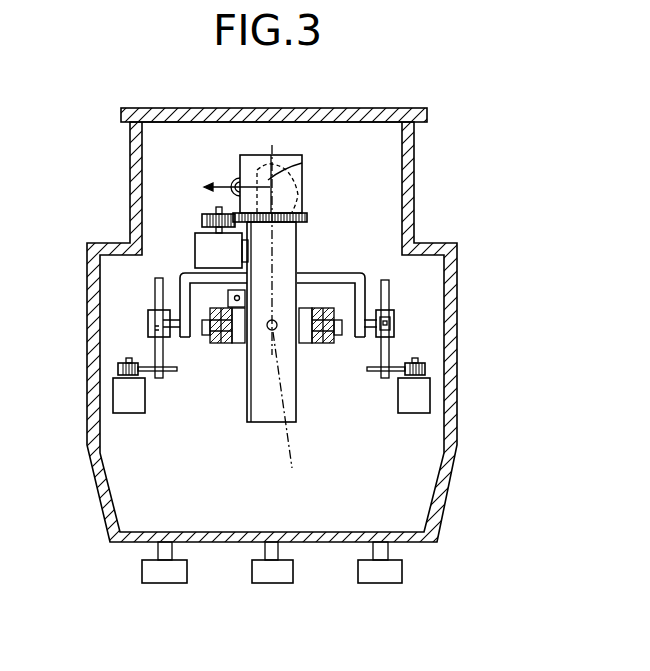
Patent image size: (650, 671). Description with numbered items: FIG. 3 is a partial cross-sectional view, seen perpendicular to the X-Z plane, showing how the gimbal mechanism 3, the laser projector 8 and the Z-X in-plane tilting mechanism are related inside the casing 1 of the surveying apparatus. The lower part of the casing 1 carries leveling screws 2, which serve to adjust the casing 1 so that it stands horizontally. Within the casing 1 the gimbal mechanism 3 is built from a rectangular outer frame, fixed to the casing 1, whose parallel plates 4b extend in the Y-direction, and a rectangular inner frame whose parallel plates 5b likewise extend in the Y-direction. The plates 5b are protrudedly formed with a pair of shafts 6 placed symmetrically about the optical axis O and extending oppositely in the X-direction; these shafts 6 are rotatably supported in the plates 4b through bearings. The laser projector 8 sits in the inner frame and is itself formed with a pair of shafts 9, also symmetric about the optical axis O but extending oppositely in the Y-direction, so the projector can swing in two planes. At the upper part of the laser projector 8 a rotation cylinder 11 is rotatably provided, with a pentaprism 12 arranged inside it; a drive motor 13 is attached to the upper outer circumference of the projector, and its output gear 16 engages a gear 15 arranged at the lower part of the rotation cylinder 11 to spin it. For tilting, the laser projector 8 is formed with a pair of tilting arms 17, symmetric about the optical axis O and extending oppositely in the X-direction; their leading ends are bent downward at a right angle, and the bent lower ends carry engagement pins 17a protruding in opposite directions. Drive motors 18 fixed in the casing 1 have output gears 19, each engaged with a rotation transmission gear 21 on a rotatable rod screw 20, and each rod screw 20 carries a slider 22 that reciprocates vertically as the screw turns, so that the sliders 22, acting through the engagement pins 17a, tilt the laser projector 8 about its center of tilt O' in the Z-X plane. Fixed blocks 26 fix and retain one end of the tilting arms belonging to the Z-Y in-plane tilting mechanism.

The casing 1 is at (458, 417).
The leveling screws 2 is at (163, 585).
The gimbal mechanism 3 is at (333, 302).
The parallel plates 4b is at (213, 343).
The parallel plates 5b is at (233, 343).
The shafts 6 is at (204, 327).
The laser projector 8 is at (275, 332).
The shafts 9 is at (257, 335).
The rotation cylinder 11 is at (280, 153).
The pentaprism 12 is at (303, 187).
The drive motor 13 is at (205, 250).
The gear 15 is at (310, 217).
The output gear 16 is at (204, 213).
The tilting arms 17 is at (180, 274).
The engagement pins 17a is at (392, 321).
The drive motors 18 is at (125, 402).
The output gears 19 is at (118, 368).
The rod screws 20 is at (155, 350).
The rotation transmission gear 21 is at (160, 379).
The slider 22 is at (148, 322).
The fixed blocks 26 is at (155, 290).
The optical axis O is at (367, 241).
The center of tilt O' is at (291, 409).